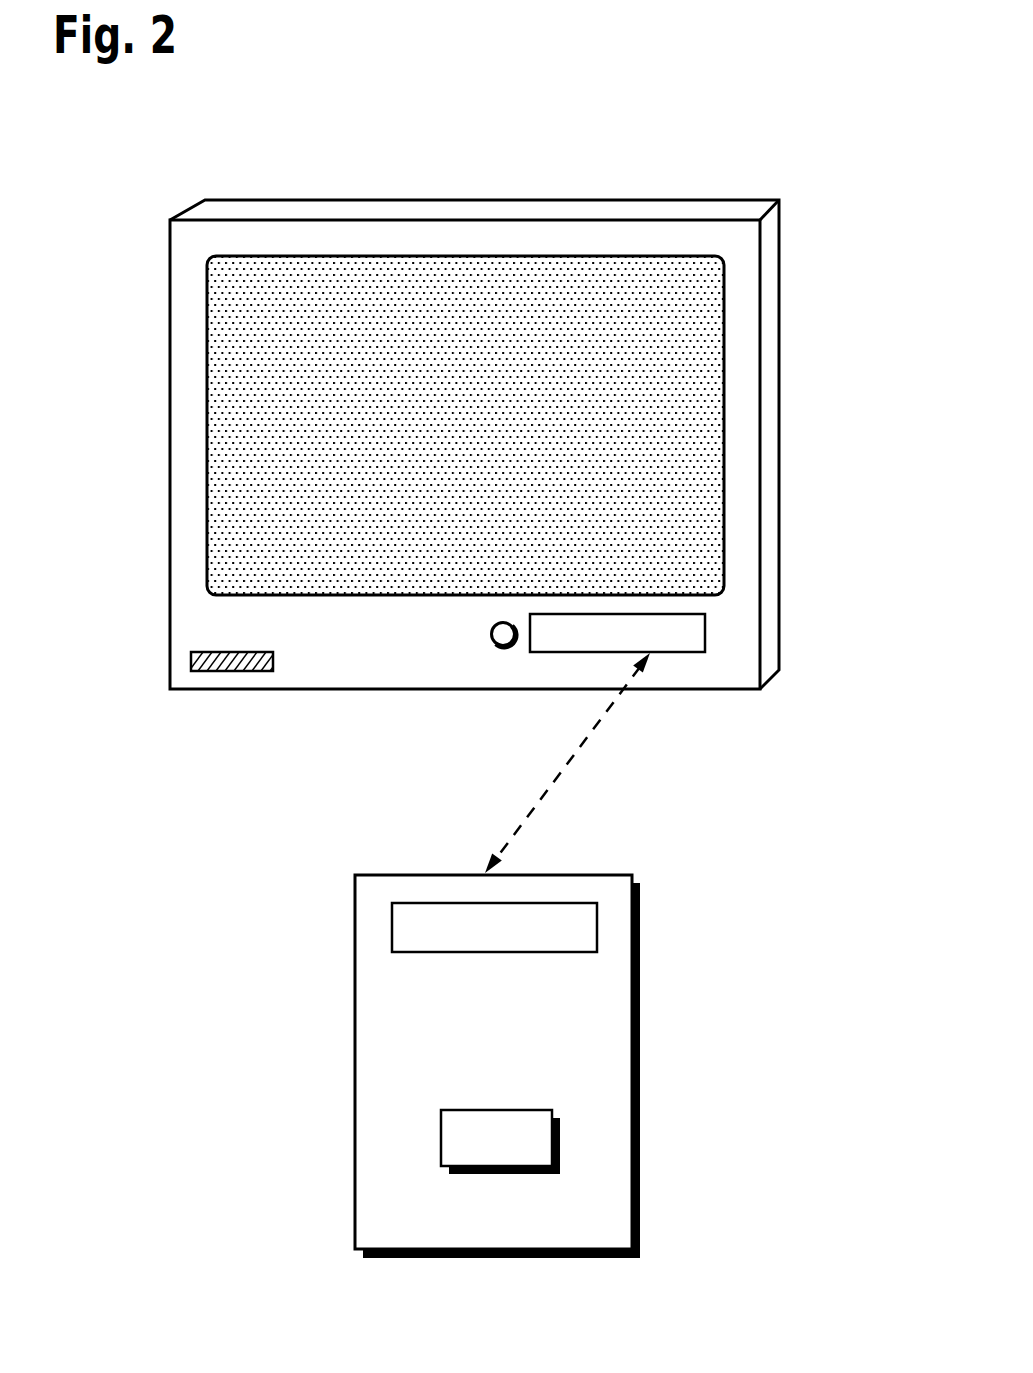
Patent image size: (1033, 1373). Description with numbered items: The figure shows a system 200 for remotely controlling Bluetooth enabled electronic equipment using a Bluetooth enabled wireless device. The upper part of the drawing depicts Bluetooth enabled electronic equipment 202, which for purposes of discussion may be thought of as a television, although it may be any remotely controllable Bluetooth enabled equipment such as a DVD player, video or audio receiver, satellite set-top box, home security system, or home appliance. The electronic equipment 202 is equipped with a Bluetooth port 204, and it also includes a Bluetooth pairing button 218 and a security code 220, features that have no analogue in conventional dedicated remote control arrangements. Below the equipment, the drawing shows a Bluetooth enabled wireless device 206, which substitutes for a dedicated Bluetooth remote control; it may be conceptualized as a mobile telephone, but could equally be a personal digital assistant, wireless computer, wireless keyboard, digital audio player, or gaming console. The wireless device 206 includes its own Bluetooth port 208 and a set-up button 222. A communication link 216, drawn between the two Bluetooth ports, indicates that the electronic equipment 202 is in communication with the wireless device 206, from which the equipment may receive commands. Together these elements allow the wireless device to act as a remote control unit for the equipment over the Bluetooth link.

The system 200 is at (855, 98).
The Bluetooth enabled electronic equipment 202 is at (566, 200).
The Bluetooth port 204 is at (665, 652).
The Bluetooth enabled wireless device 206 is at (423, 1226).
The Bluetooth port 208 is at (585, 931).
The communication link 216 is at (562, 773).
The Bluetooth pairing button 218 is at (490, 634).
The security code 220 is at (245, 652).
The set-up button 222 is at (535, 1174).